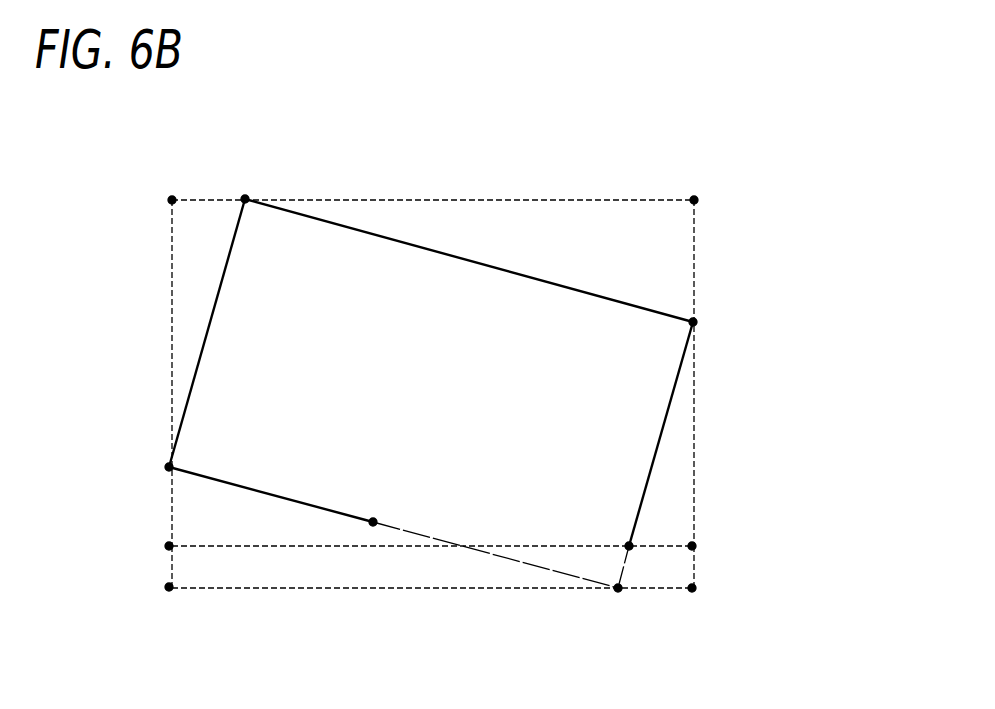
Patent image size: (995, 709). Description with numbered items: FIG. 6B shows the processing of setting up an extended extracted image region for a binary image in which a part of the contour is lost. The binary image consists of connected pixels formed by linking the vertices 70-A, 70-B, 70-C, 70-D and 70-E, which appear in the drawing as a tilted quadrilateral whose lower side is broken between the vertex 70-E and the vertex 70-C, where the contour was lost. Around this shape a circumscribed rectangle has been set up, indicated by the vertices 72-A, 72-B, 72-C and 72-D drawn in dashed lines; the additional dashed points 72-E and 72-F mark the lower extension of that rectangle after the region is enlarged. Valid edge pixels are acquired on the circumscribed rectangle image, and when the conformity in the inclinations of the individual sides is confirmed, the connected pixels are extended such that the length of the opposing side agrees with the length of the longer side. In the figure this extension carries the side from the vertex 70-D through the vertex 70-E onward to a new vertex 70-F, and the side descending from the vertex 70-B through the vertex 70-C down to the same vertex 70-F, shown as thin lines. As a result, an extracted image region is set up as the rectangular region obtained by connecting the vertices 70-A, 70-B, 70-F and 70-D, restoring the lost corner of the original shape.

The vertex of connected pixels 70-A is at (242, 196).
The vertex of connected pixels 70-B is at (697, 320).
The vertex of connected pixels 70-C is at (632, 549).
The vertex of connected pixels 70-D is at (166, 469).
The vertex of connected pixels 70-E is at (373, 526).
The vertex of extracted image region 70-F is at (617, 592).
The vertex of circumscribed rectangle 72-A is at (172, 197).
The vertex of circumscribed rectangle 72-B is at (697, 198).
The vertex of circumscribed rectangle 72-C is at (696, 546).
The vertex of circumscribed rectangle 72-D is at (166, 546).
The corner point E of reference rectangle 72-E is at (696, 588).
The corner point F of reference rectangle 72-F is at (166, 587).